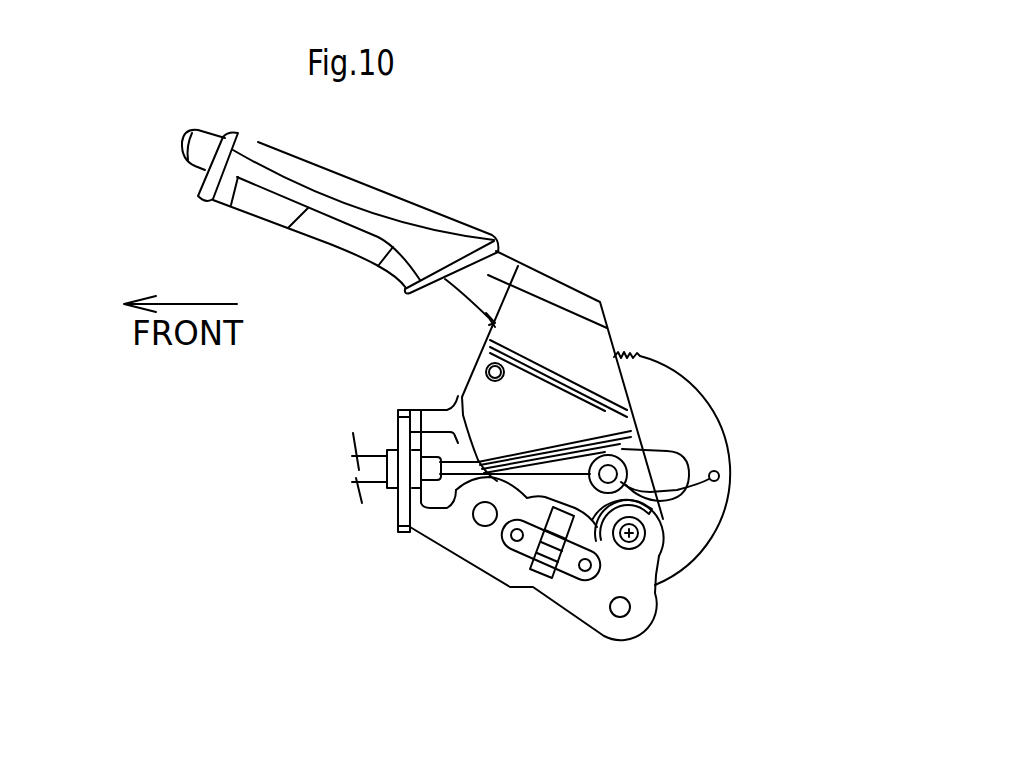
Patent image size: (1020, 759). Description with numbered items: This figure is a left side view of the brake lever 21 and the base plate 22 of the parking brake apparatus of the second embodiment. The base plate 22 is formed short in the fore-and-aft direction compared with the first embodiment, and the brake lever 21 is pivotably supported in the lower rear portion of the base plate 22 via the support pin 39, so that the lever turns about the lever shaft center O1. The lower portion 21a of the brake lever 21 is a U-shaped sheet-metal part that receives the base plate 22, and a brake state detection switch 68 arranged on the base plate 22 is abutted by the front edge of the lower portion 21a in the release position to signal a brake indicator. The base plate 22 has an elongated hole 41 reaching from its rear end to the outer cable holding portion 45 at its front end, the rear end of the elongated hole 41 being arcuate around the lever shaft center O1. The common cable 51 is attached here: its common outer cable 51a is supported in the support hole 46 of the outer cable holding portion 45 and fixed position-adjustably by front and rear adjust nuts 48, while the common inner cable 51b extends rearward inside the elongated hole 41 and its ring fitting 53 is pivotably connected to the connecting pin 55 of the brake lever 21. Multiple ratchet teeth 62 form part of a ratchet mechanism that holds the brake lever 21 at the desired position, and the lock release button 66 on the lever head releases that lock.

The brake lever 21 is at (438, 223).
The lower portion of the brake lever 21a is at (558, 285).
The base plate 22 is at (678, 545).
The support pin 39 is at (629, 548).
The elongated hole 41 is at (667, 477).
The outer cable holding portion 45 is at (402, 433).
The support hole 46 is at (405, 460).
The adjust nuts 48 is at (410, 532).
The common cable 51 is at (349, 465).
The common outer cable 51a is at (359, 484).
The common inner cable 51b is at (457, 489).
The ring fitting 53 is at (719, 474).
The connecting pin 55 is at (609, 473).
The ratchet teeth 62 is at (628, 352).
The lock release button 66 is at (200, 158).
The brake state detection switch 68 is at (558, 530).
The lever shaft center O1 is at (639, 540).